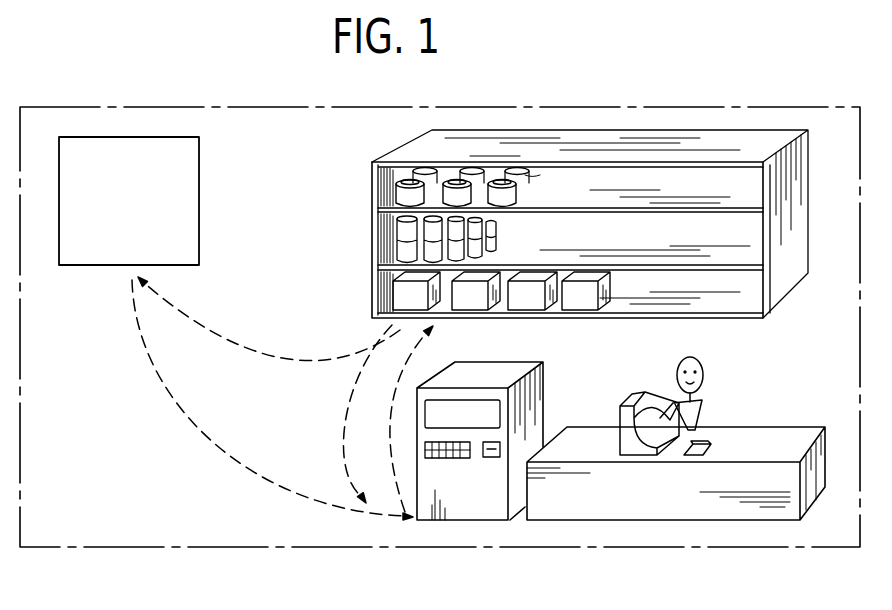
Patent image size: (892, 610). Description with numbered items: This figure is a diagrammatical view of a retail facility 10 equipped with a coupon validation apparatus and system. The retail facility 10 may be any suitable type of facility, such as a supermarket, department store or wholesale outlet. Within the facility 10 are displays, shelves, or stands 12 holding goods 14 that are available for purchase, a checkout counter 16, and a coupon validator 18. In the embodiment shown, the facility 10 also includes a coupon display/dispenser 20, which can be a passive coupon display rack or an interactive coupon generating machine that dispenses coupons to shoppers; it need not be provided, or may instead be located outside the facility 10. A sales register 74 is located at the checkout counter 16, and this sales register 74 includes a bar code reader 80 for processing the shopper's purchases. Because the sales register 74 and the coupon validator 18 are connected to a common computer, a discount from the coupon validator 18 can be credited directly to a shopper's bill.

The retail facility 10 is at (79, 100).
The displays, shelves, or stands 12 is at (785, 273).
The goods 14 is at (398, 290).
The checkout counter 16 is at (737, 520).
The coupon validator 18 is at (523, 362).
The coupon display/dispenser 20 is at (199, 192).
The sales register 74 is at (654, 395).
The bar code reader 80 is at (700, 440).